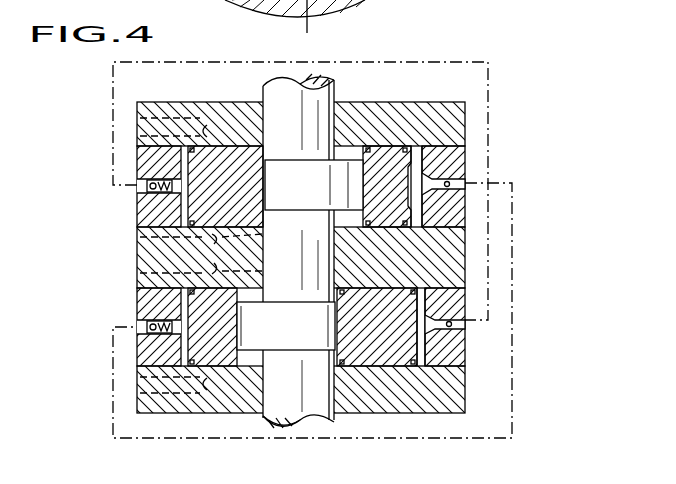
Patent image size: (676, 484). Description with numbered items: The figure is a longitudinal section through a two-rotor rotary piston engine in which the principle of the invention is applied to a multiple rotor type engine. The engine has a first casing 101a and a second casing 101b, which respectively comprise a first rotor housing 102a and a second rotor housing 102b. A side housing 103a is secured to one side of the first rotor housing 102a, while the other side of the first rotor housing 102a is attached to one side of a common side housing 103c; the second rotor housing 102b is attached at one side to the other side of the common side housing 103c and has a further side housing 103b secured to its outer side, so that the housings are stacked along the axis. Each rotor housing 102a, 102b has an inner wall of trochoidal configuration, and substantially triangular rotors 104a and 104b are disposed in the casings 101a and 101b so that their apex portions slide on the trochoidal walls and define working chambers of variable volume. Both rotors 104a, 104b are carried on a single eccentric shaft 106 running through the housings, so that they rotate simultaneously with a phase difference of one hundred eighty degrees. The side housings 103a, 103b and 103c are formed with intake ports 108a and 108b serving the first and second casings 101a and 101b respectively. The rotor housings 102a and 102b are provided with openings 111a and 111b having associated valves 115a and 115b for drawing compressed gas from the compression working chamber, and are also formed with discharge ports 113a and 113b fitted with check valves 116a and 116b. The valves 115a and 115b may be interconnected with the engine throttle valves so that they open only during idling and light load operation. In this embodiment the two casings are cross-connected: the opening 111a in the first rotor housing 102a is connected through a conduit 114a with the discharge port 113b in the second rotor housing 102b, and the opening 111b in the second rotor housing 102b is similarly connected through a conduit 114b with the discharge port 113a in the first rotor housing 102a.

The first casing 101a is at (305, 146).
The second casing 101b is at (311, 373).
The first rotor housing 102a is at (455, 212).
The second rotor housing 102b is at (455, 298).
The side housing 103a is at (430, 112).
The side housing 103b is at (445, 400).
The common side housing 103c is at (450, 250).
The rotor 104a is at (368, 148).
The rotor 104b is at (386, 370).
The eccentric shaft 106 is at (277, 88).
The intake port 108a is at (213, 126).
The intake port 108b is at (210, 398).
The opening 111a is at (443, 163).
The opening 111b is at (455, 342).
The discharge port 113a is at (172, 194).
The discharge port 113b is at (170, 336).
The conduit 114a is at (512, 381).
The conduit 114b is at (402, 60).
The valve 115a is at (447, 183).
The valve 115b is at (465, 323).
The check valve 116a is at (137, 182).
The check valve 116b is at (138, 323).